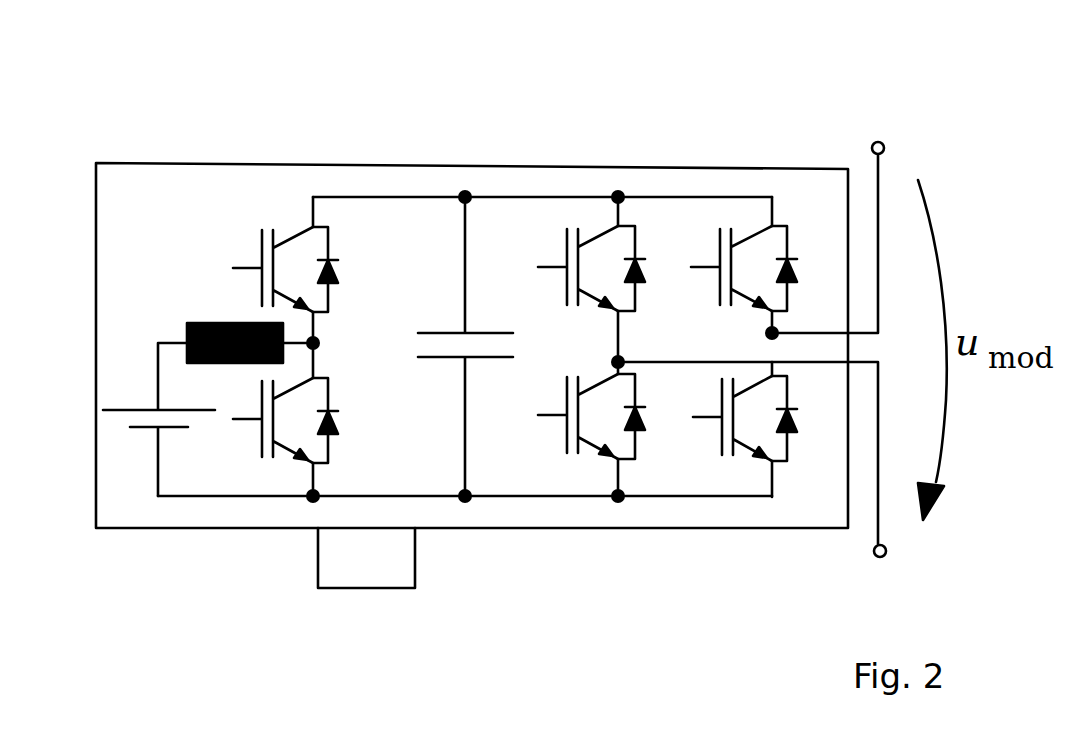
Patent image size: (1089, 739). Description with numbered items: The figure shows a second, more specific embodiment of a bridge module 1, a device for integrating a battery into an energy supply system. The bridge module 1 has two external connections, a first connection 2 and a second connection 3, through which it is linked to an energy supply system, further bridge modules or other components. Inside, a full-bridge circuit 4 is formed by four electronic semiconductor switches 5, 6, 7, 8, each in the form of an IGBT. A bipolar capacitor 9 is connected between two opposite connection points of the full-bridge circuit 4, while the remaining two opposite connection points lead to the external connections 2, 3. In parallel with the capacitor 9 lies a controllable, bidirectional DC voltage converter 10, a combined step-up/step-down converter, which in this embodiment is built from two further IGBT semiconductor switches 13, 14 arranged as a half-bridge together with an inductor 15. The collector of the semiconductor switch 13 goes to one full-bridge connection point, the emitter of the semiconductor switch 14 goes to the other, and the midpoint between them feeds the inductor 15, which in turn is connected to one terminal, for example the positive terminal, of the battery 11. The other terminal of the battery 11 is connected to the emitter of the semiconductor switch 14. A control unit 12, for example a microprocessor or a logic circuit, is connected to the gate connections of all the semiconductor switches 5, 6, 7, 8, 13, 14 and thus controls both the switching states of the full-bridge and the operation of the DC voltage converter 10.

The bridge module 1 is at (507, 167).
The first connection 2 is at (885, 147).
The second connection 3 is at (887, 551).
The full-bridge circuit 4 is at (699, 191).
The electronic semiconductor switch 5 is at (720, 286).
The electronic semiconductor switch 6 is at (722, 441).
The electronic semiconductor switch 7 is at (567, 436).
The electronic semiconductor switch 8 is at (567, 285).
The bipolar capacitor 9 is at (455, 331).
The DC voltage converter 10 is at (246, 196).
The battery 11 is at (128, 408).
The control unit 12 is at (416, 575).
The electronic semiconductor switch 13 is at (260, 266).
The electronic semiconductor switch 14 is at (262, 438).
The inductor 15 is at (207, 323).